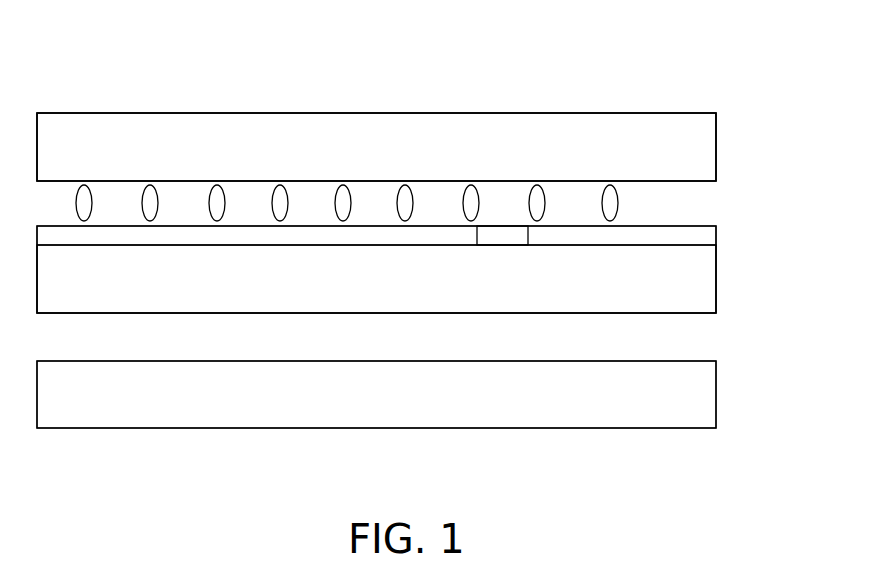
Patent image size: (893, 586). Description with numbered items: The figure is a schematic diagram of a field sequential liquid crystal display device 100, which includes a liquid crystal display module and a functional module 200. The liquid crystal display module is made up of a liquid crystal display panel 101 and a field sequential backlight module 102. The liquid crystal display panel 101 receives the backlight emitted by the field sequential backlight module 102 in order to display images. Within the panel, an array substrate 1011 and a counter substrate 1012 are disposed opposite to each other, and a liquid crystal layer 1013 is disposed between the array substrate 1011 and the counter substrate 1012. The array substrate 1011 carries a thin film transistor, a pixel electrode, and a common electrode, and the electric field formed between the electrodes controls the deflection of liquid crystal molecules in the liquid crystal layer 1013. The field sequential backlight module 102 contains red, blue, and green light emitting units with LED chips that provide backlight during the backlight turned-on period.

The field sequential liquid crystal display device 100 is at (386, 78).
The liquid crystal display panel 101 is at (730, 113).
The array substrate 1011 is at (130, 268).
The counter substrate 1012 is at (200, 160).
The liquid crystal layer 1013 is at (86, 195).
The functional module 200 is at (507, 237).
The field sequential backlight module 102 is at (687, 399).